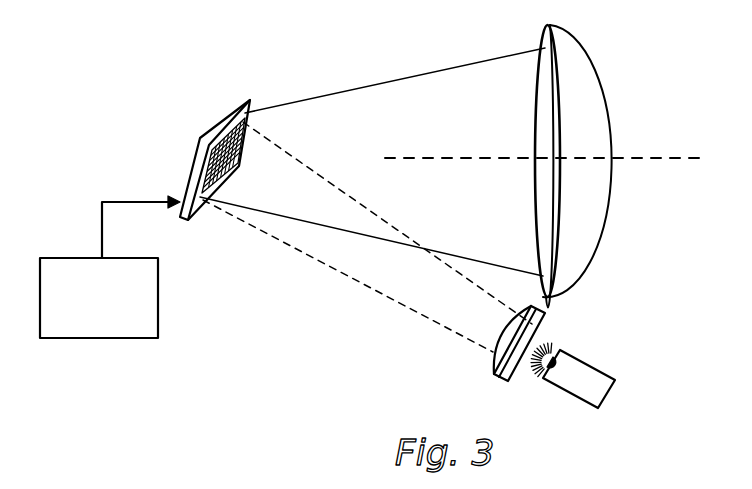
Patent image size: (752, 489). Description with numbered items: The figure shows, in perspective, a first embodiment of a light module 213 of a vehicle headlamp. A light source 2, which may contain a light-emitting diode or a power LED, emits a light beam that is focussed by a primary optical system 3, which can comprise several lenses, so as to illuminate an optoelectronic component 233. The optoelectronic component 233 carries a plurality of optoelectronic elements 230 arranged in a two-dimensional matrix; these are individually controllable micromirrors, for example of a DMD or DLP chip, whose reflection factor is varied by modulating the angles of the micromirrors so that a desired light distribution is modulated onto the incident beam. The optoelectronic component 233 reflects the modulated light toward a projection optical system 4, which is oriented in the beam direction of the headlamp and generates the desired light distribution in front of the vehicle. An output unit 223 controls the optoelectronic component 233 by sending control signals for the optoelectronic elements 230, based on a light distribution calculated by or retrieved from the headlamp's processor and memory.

The second light module 213 is at (114, 62).
The output unit 223 is at (122, 309).
The optoelectronic component 233 is at (193, 200).
The optoelectronic elements 230 is at (215, 168).
The projection optical system 4 is at (570, 62).
The primary optical system 3 is at (545, 316).
The light source 2 is at (585, 370).